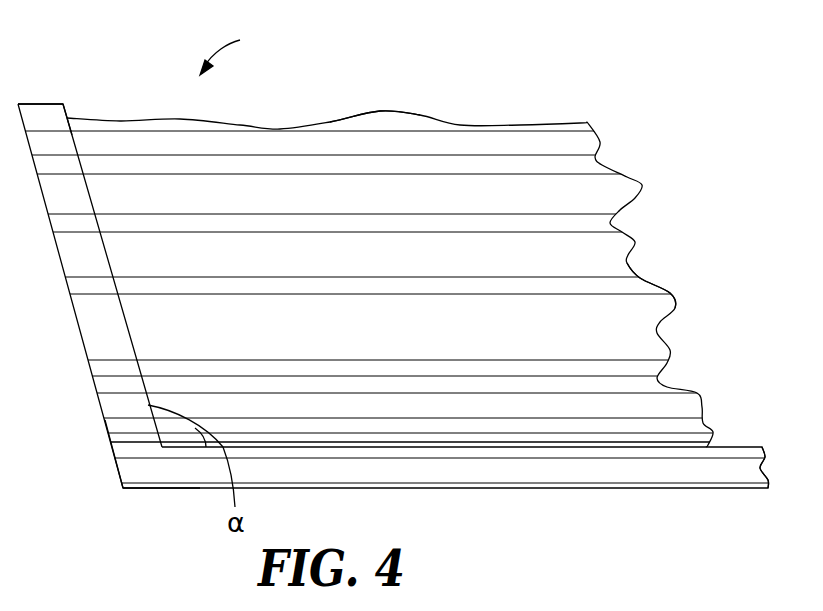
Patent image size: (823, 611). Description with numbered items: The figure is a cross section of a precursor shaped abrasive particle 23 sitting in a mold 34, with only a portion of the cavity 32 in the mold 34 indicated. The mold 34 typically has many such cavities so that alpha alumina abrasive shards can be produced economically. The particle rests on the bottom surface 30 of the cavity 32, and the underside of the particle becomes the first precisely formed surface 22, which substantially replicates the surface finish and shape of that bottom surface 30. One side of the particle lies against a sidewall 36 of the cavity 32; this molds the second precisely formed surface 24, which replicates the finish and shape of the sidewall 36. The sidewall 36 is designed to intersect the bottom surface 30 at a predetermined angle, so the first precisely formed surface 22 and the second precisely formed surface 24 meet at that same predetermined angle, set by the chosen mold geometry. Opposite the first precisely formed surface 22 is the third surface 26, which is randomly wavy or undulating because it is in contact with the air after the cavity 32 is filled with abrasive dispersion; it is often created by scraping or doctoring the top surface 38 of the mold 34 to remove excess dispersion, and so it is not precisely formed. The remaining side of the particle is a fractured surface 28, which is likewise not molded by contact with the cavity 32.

The first precisely formed surface 22 is at (518, 448).
The precursor shaped abrasive particle 23 is at (523, 142).
The second precisely formed surface 24 is at (126, 325).
The third surface 26 is at (370, 112).
The fractured surface 28 is at (650, 283).
The bottom surface 30 is at (735, 446).
The cavity 32 is at (239, 50).
The mold 34 is at (130, 469).
The sidewall 36 is at (66, 116).
The top surface 38 is at (36, 102).